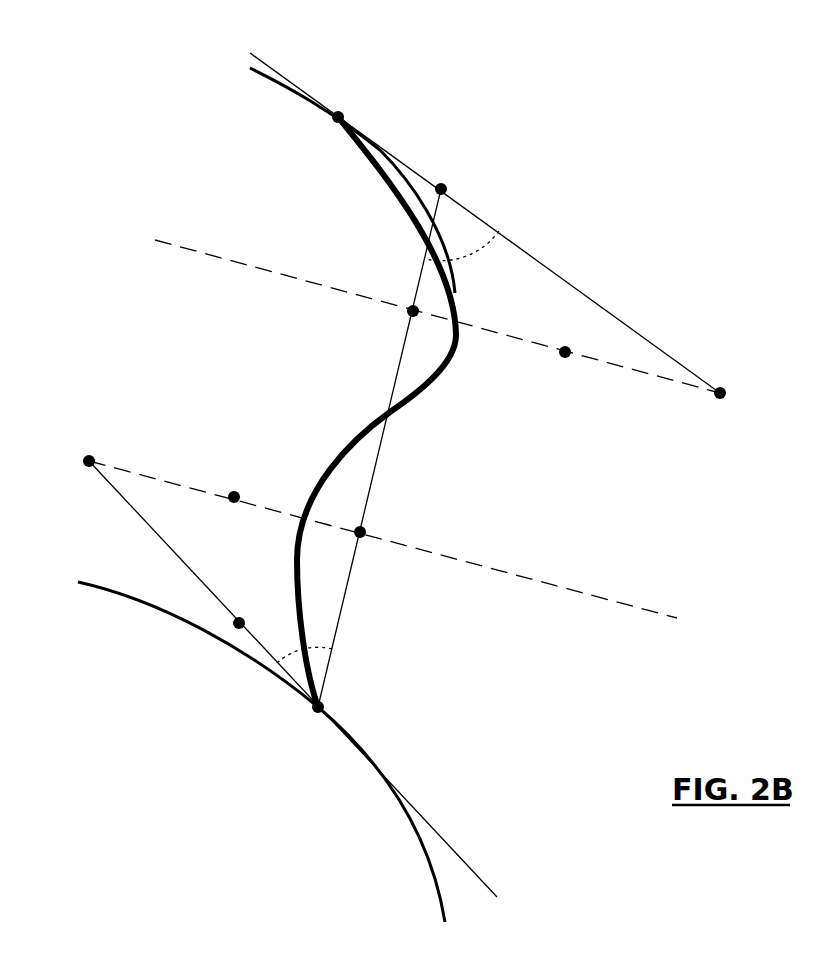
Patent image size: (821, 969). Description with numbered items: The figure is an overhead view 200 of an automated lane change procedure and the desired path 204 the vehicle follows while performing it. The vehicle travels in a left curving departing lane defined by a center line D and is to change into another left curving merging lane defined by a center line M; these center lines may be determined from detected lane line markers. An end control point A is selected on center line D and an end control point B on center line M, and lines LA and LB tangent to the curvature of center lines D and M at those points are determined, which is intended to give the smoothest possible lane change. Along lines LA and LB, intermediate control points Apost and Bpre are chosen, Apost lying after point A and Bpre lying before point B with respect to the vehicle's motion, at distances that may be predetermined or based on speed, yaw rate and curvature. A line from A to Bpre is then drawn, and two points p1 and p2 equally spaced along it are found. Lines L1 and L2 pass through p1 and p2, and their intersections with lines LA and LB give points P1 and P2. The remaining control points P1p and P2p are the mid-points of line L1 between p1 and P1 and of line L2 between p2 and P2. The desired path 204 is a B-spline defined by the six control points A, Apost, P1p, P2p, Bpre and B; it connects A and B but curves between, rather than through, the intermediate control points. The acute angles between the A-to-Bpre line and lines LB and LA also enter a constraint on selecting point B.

The overhead view 200 is at (672, 127).
The desired path 204 is at (353, 443).
The end control point A is at (319, 728).
The end control point B is at (339, 95).
The intermediate control point Apost is at (274, 606).
The intermediate control point Bpre is at (457, 171).
The point P1 is at (90, 442).
The intermediate control point P1p is at (242, 478).
The point P2 is at (739, 410).
The intermediate control point P2p is at (562, 374).
The point p1 is at (381, 514).
The point p2 is at (395, 319).
The line L1 is at (404, 553).
The line L2 is at (420, 305).
The line LA is at (310, 700).
The line LB is at (472, 203).
The center line M is at (335, 175).
The center line D is at (248, 741).